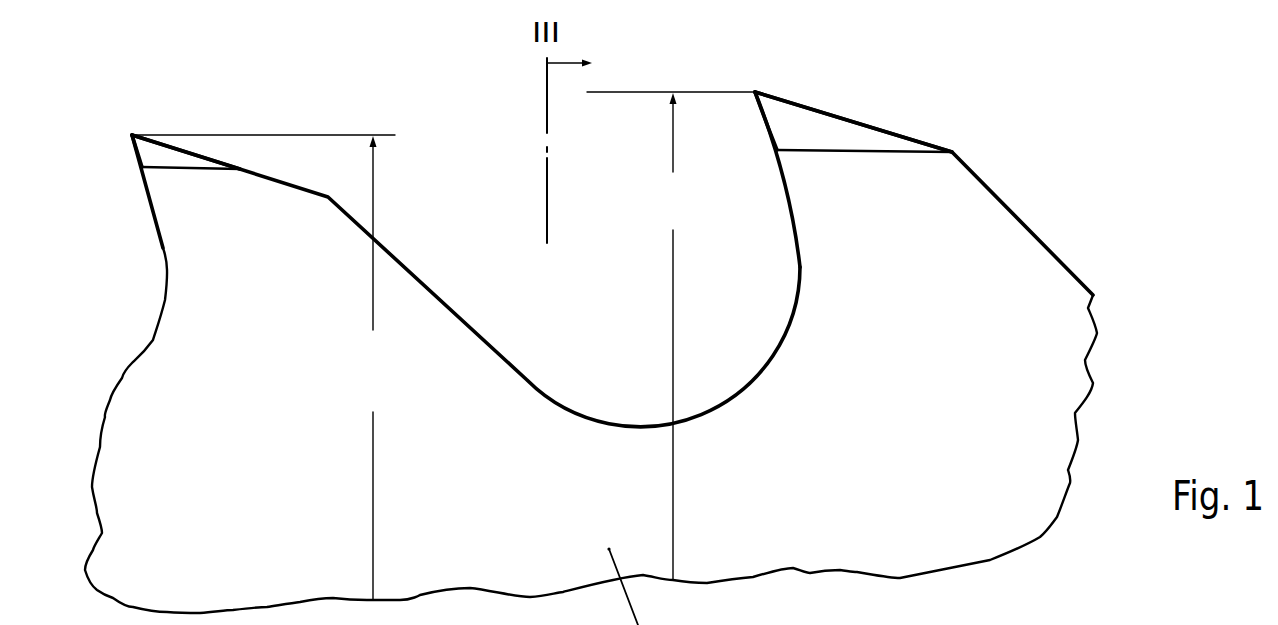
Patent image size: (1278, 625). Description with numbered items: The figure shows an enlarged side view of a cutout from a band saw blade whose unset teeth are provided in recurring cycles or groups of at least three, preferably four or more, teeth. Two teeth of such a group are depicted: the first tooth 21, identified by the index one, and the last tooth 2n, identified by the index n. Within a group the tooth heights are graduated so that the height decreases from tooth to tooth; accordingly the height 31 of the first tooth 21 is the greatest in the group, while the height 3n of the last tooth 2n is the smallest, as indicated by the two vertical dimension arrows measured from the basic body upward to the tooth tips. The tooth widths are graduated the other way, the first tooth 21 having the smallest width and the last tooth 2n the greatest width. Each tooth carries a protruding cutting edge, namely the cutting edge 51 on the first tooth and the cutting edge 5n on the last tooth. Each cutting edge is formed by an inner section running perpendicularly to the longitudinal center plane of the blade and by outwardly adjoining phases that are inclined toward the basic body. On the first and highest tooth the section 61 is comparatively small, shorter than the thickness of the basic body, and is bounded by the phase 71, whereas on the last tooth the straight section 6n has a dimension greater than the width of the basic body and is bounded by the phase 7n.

The last tooth 2n is at (183, 213).
The first tooth 21 is at (895, 240).
The height of last tooth 3n is at (263, 367).
The height of first tooth 31 is at (671, 336).
The cutting edge of last tooth 5n is at (123, 106).
The cutting edge of first tooth 51 is at (735, 70).
The straight section of last tooth 6n is at (133, 133).
The section of first tooth 61 is at (755, 92).
The phase of last tooth 7n is at (138, 152).
The phase of first tooth 71 is at (767, 127).